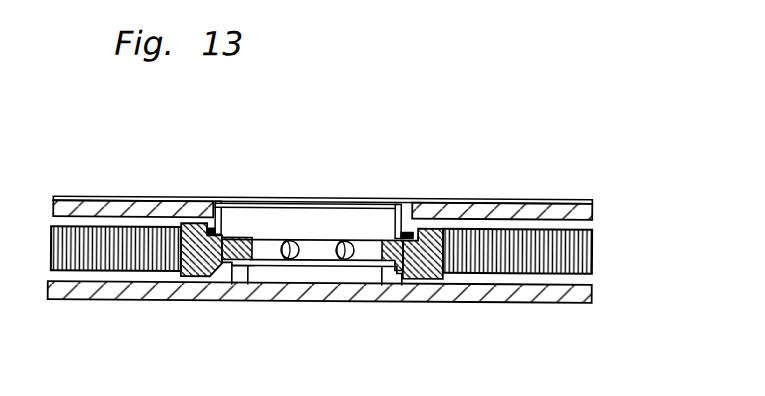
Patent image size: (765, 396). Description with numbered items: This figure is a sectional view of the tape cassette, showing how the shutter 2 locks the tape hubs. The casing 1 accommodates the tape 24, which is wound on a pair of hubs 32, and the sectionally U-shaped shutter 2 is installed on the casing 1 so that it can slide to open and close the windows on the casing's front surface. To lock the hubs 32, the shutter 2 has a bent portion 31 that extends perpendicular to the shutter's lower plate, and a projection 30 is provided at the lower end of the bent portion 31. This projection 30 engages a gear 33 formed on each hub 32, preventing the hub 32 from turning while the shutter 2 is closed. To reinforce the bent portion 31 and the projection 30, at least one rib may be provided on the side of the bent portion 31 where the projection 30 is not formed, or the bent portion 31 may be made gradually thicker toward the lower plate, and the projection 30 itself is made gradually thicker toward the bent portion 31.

The casing 1 is at (398, 284).
The shutter 2 is at (497, 200).
The tape 24 is at (593, 245).
The projection 30 is at (213, 220).
The bent portion 31 is at (226, 210).
The hub 32 is at (208, 264).
The gear 33 is at (401, 226).